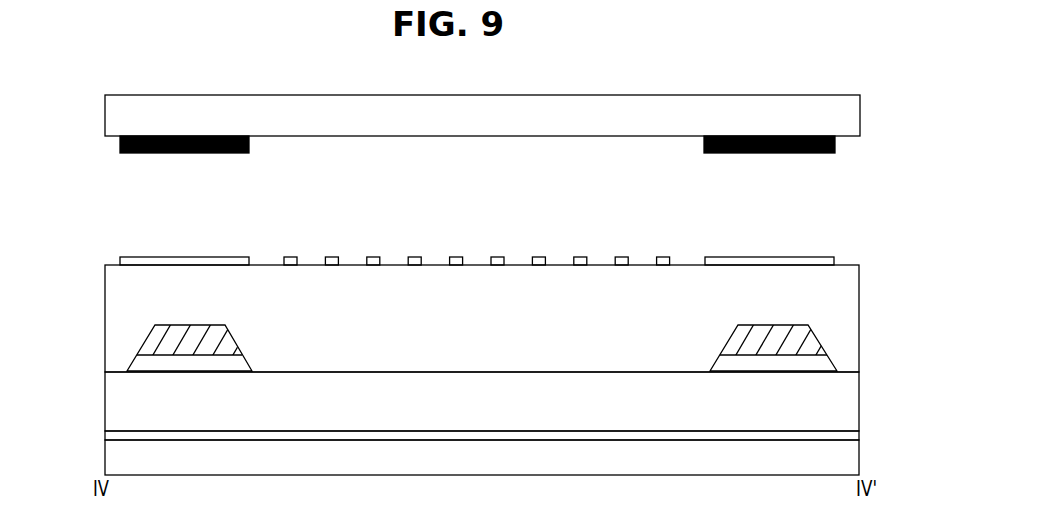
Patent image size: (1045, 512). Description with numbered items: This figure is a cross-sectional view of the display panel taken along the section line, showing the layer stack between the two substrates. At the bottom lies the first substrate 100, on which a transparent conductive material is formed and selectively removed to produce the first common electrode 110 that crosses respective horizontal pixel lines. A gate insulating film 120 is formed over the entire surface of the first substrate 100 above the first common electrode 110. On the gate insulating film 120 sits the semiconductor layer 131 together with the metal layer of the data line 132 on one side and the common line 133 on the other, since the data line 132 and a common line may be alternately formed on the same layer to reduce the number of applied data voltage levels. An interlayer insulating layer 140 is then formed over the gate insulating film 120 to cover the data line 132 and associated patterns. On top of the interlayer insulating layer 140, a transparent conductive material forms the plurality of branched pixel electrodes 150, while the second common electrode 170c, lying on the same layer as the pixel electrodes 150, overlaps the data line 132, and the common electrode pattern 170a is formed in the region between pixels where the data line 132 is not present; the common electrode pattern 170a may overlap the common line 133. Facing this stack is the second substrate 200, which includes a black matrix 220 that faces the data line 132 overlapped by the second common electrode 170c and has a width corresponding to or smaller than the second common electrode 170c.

The second substrate 200 is at (120, 123).
The black matrix 220 is at (120, 147).
The interlayer insulating layer 140 is at (852, 280).
The gate insulating film 120 is at (850, 398).
The first common electrode 110 is at (122, 437).
The first substrate 100 is at (850, 457).
The second common electrode 170c is at (197, 262).
The common electrode pattern 170a is at (748, 262).
The pixel electrodes 150 is at (287, 262).
The semiconductor layer 131 is at (150, 368).
The data line 132 is at (178, 340).
The common line 133 is at (785, 340).